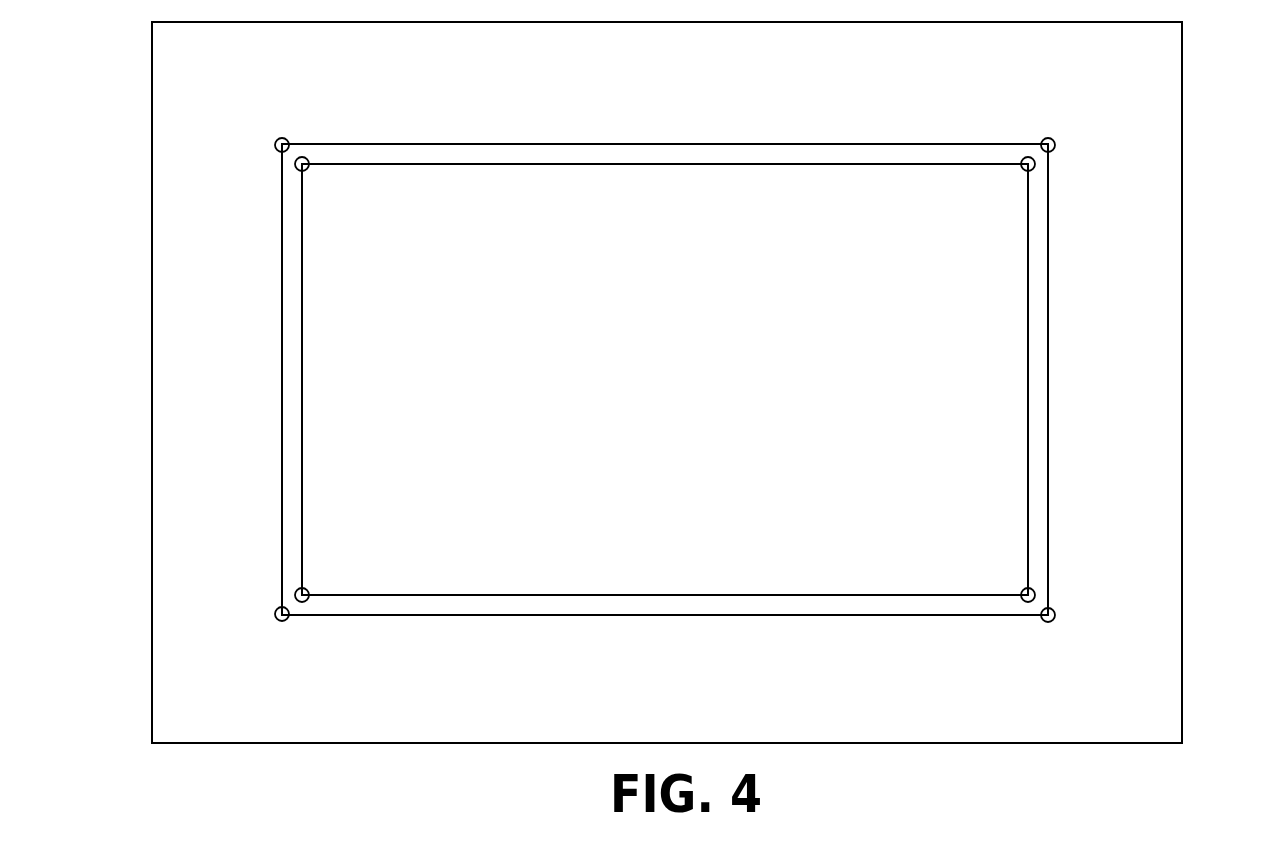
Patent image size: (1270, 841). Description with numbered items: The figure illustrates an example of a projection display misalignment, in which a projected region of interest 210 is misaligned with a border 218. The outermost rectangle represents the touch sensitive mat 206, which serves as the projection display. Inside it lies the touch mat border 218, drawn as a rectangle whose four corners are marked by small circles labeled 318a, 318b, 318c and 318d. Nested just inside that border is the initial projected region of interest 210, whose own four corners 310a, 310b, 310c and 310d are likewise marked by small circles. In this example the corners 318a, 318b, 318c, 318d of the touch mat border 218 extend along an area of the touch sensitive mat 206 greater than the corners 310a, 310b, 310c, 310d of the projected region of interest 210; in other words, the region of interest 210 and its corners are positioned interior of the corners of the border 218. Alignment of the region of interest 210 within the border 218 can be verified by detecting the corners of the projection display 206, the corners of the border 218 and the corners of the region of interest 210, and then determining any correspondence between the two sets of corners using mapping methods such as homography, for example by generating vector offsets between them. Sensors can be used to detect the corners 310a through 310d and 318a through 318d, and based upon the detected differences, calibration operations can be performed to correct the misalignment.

The touch sensitive mat 206 is at (1117, 222).
The touch mat border 218 is at (282, 202).
The projected region of interest 210 is at (320, 374).
The corner of region of interest 310a is at (305, 157).
The corner of region of interest 310b is at (1022, 157).
The corner of region of interest 310c is at (1024, 601).
The corner of region of interest 310d is at (305, 601).
The corner of touch mat border 318a is at (276, 140).
The corner of touch mat border 318b is at (1054, 139).
The corner of touch mat border 318c is at (1048, 622).
The corner of touch mat border 318d is at (282, 621).